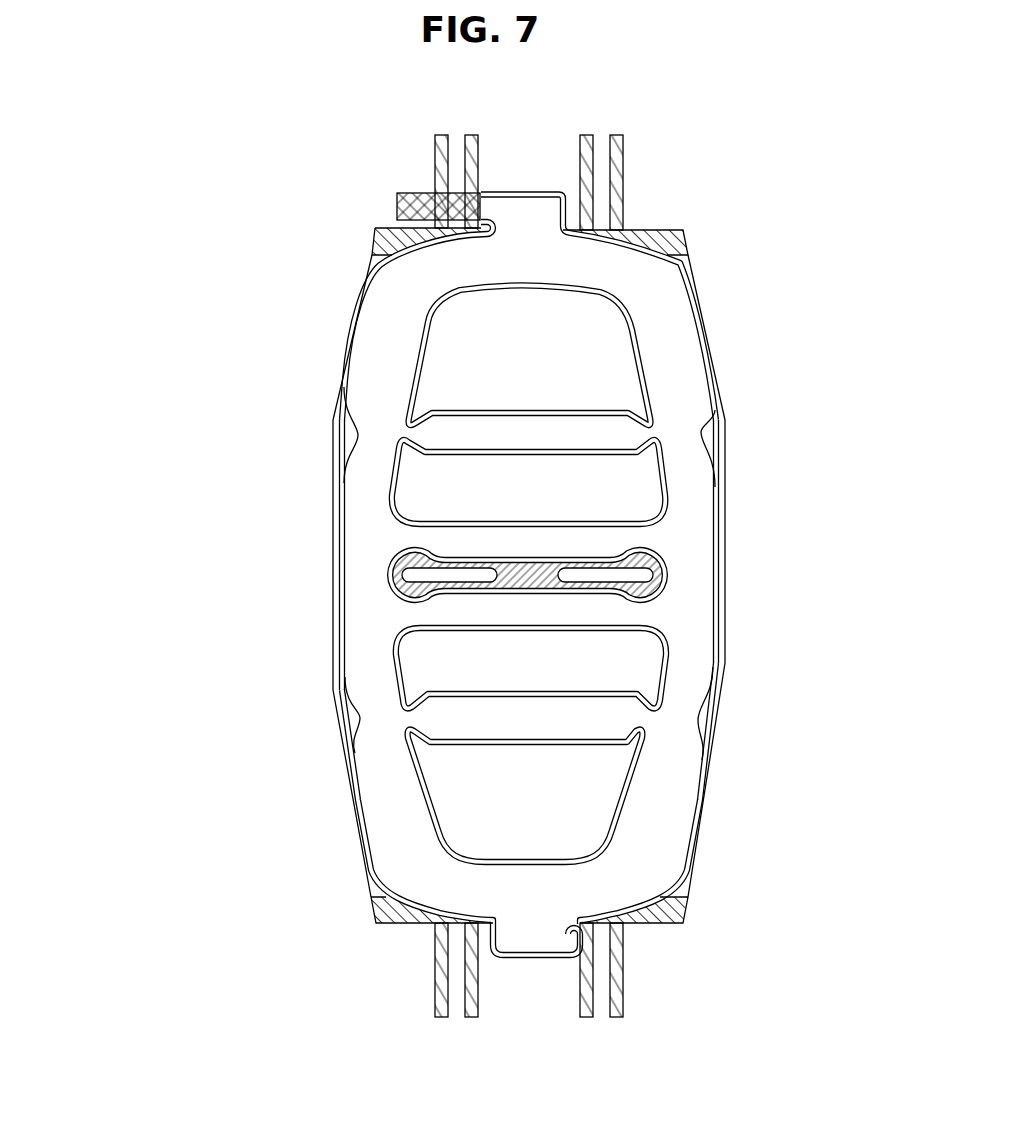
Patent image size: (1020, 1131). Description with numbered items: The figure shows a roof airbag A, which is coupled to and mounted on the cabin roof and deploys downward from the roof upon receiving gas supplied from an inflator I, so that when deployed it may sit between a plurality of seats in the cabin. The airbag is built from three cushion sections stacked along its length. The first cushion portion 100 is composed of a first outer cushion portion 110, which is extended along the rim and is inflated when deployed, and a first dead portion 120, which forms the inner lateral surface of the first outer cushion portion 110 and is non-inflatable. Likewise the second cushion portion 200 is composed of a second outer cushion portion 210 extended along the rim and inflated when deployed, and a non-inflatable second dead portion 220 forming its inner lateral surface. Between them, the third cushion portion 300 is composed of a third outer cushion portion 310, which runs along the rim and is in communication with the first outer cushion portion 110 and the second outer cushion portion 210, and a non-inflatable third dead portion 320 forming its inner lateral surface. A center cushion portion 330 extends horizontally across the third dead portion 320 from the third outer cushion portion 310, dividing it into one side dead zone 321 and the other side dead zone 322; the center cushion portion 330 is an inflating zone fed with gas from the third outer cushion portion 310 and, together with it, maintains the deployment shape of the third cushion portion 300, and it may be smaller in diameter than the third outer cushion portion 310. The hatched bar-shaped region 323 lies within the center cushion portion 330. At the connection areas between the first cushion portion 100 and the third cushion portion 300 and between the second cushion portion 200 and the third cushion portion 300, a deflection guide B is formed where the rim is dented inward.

The first cushion portion 100 is at (205, 313).
The first outer cushion portion 110 is at (390, 385).
The first dead portion 120 is at (507, 337).
The second cushion portion 200 is at (847, 818).
The second outer cushion portion 210 is at (651, 812).
The second dead portion 220 is at (572, 832).
The third cushion portion 300 is at (102, 570).
The third outer cushion portion 310 is at (375, 665).
The third dead portion 320 is at (176, 505).
The one side dead zone 321 is at (455, 498).
The other side dead zone 322 is at (463, 653).
The reinforcing rib 323 is at (408, 556).
The center cushion portion 330 is at (577, 602).
The roof airbag A is at (712, 301).
The deflection guide B is at (357, 436).
The inflator I is at (400, 193).